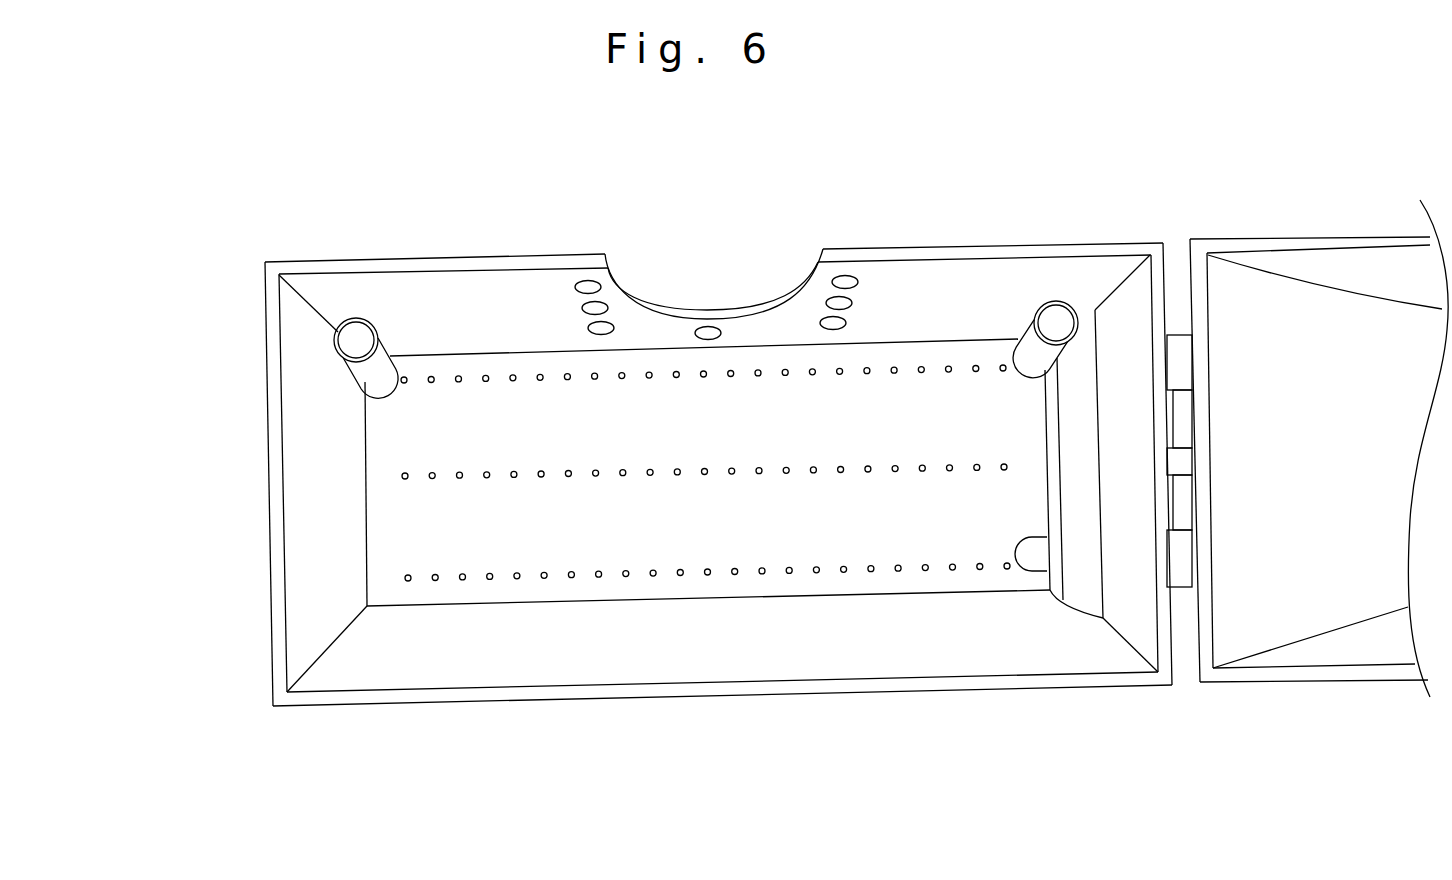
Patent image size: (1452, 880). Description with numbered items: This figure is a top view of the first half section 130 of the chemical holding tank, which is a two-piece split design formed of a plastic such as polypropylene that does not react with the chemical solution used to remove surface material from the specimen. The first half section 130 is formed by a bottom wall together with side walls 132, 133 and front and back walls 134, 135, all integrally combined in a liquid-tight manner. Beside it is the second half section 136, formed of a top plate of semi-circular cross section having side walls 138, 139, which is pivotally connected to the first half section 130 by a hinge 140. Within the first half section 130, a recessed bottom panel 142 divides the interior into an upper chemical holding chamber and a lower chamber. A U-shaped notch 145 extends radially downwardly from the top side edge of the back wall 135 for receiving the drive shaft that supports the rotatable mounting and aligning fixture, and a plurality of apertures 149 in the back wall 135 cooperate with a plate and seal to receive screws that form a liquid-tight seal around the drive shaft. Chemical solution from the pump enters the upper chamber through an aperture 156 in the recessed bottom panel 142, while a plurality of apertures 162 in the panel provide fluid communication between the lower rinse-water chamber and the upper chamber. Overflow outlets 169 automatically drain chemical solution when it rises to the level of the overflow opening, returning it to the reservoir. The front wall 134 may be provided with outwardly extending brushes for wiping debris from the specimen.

The first half section 130 is at (980, 140).
The side wall 132 is at (270, 545).
The side wall 133 is at (1177, 657).
The front wall 134 is at (773, 695).
The back wall 135 is at (335, 255).
The second half section 136 is at (1318, 168).
The side wall 138 is at (1327, 690).
The side wall 139 is at (1322, 235).
The hinge 140 is at (1178, 333).
The recessed bottom panel 142 is at (407, 522).
The U-shaped notch 145 is at (615, 272).
The apertures 149 is at (840, 280).
The aperture 156 is at (1038, 575).
The apertures 162 is at (290, 418).
The overflow outlets 169 is at (333, 333).